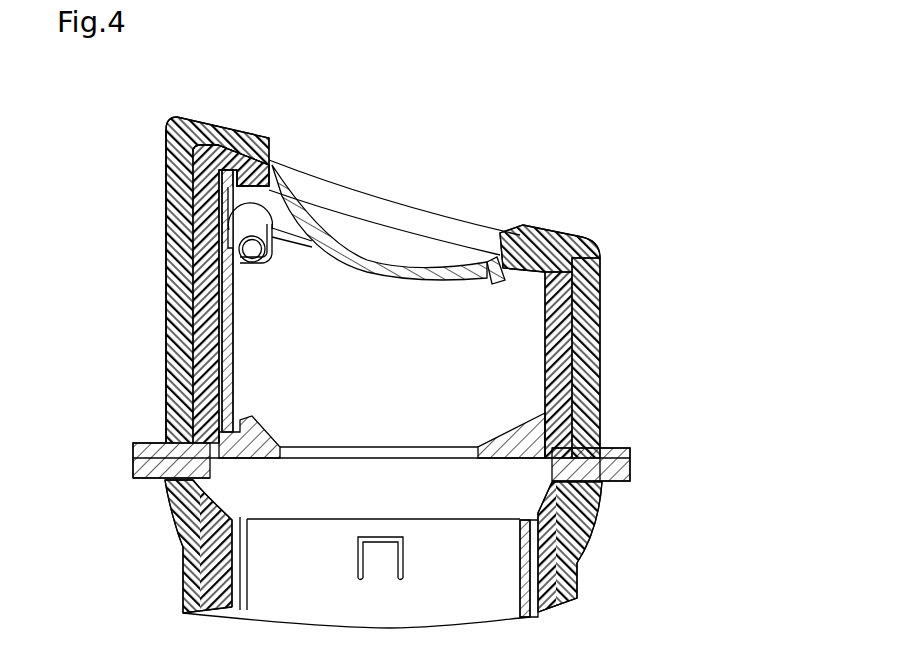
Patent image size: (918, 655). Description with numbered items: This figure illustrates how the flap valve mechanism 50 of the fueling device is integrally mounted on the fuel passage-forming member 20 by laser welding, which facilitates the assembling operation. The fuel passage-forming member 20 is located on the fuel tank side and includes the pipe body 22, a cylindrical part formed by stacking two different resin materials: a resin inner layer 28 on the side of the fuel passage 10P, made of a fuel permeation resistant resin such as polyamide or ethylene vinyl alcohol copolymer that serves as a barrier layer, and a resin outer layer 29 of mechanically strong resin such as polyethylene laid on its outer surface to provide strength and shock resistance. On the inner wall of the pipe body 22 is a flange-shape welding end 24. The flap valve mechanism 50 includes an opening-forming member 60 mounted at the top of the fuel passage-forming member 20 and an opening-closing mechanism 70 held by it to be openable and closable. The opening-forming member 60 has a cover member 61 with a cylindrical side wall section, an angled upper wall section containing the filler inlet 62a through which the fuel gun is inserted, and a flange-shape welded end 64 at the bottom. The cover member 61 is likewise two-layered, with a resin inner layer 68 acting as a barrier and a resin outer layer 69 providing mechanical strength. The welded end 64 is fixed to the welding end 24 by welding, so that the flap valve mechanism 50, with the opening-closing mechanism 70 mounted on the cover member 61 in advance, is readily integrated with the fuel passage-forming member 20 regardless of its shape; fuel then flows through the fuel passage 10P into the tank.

The fuel passage 10P is at (415, 359).
The fuel passage-forming member 20 is at (459, 555).
The pipe body 22 is at (578, 563).
The welding end 24 is at (630, 472).
The resin inner layer 28 is at (183, 589).
The resin outer layer 29 is at (185, 547).
The flap valve mechanism 50 is at (360, 72).
The opening-forming member 60 is at (557, 228).
The cover member 61 is at (600, 305).
The filler inlet 62a is at (283, 186).
The welded end 64 is at (600, 449).
The resin inner layer 68 is at (167, 268).
The resin outer layer 69 is at (167, 311).
The opening-closing mechanism 70 is at (295, 208).